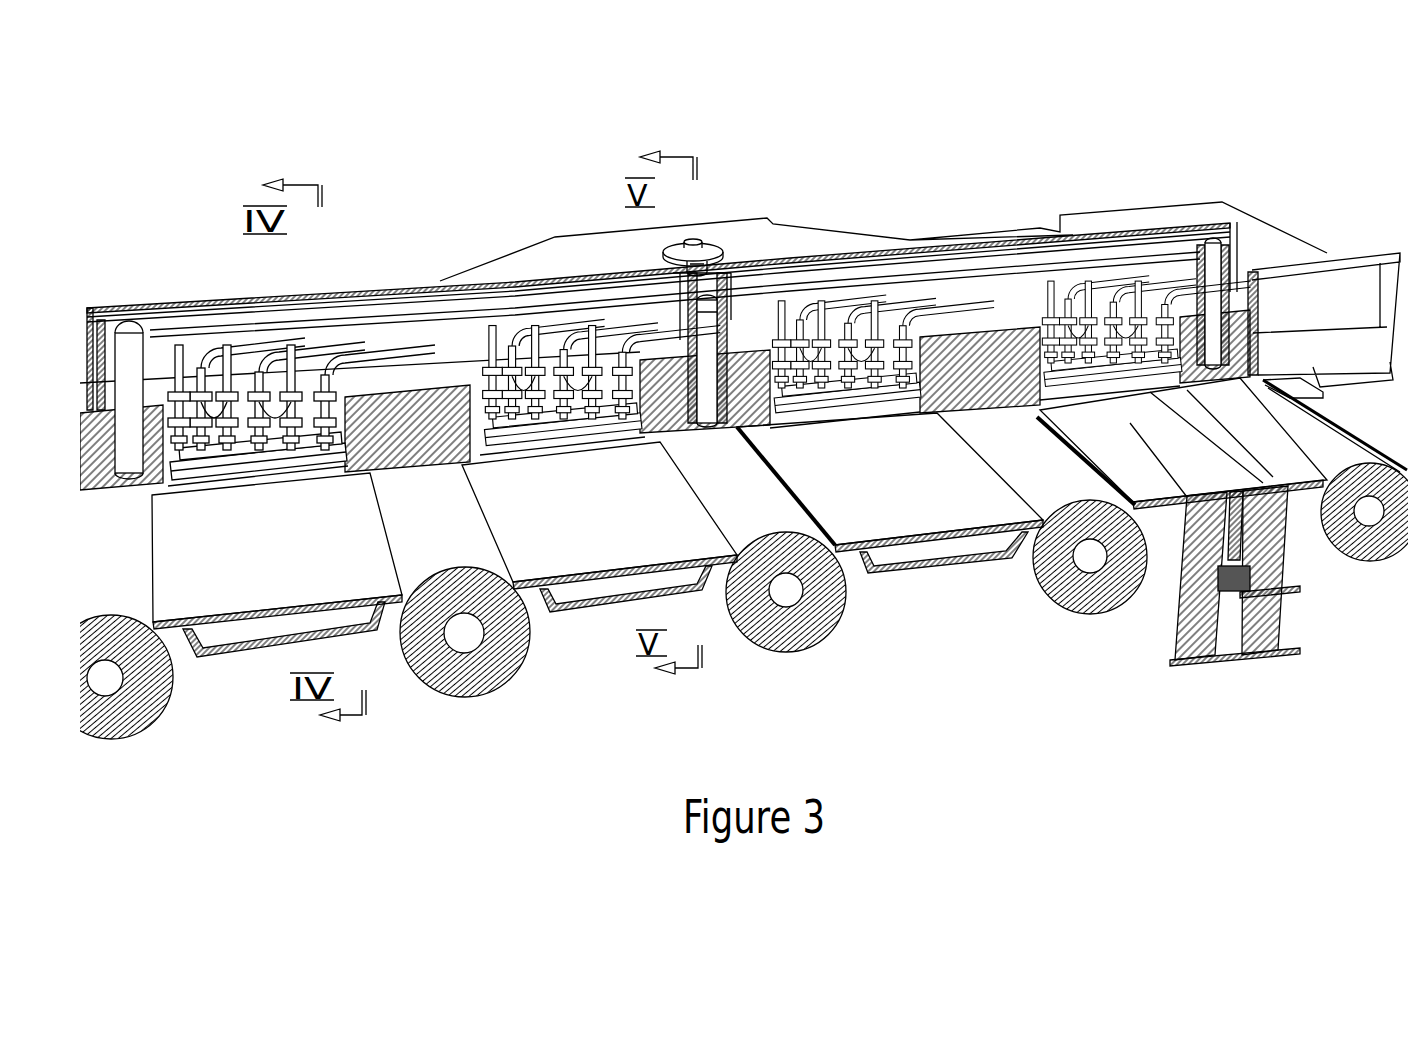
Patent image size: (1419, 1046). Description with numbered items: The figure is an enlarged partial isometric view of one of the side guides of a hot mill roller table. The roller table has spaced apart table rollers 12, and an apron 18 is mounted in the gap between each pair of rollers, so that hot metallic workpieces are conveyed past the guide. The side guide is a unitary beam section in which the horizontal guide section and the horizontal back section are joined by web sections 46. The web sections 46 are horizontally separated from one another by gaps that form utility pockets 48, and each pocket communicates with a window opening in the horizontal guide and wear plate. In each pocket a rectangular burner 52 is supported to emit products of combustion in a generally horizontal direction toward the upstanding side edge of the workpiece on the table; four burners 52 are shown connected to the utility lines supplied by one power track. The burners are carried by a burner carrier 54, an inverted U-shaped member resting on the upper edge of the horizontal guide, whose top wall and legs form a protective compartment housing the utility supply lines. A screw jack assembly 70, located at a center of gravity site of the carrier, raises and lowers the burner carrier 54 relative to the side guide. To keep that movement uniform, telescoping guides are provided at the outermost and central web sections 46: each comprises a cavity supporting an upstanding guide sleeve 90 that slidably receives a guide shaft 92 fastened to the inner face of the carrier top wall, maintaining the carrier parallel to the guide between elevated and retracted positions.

The table roller 12 is at (495, 697).
The apron 18 is at (935, 583).
The web section 46 is at (1230, 382).
The utility pocket 48 is at (1060, 402).
The burner 52 is at (1125, 405).
The burner carrier 54 is at (862, 230).
The screw jack assembly 70 is at (703, 243).
The guide sleeve 90 is at (733, 425).
The guide shaft 92 is at (1222, 250).